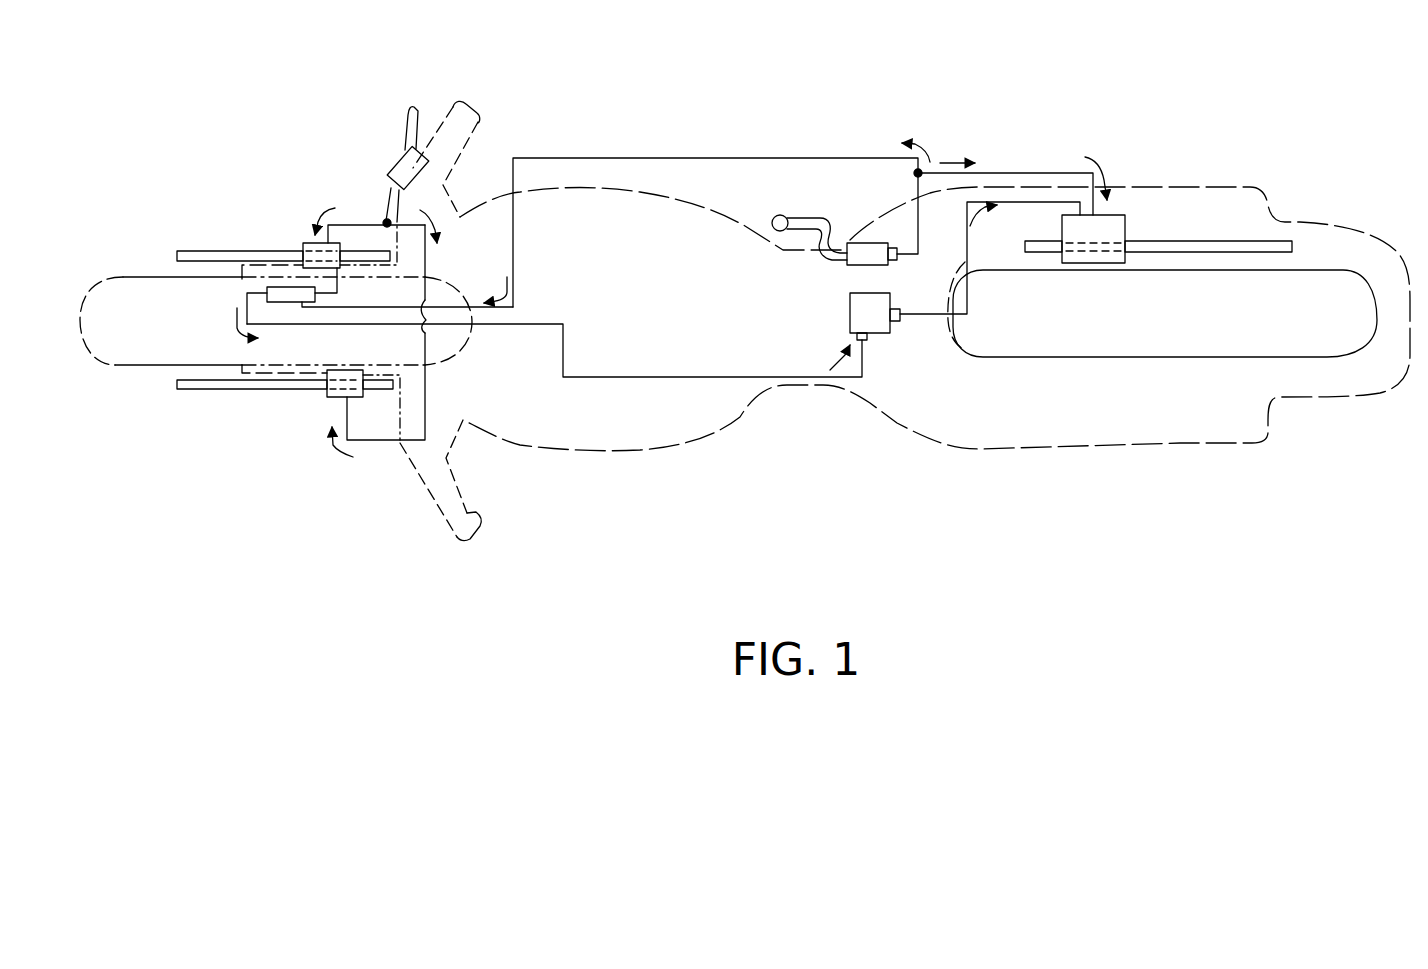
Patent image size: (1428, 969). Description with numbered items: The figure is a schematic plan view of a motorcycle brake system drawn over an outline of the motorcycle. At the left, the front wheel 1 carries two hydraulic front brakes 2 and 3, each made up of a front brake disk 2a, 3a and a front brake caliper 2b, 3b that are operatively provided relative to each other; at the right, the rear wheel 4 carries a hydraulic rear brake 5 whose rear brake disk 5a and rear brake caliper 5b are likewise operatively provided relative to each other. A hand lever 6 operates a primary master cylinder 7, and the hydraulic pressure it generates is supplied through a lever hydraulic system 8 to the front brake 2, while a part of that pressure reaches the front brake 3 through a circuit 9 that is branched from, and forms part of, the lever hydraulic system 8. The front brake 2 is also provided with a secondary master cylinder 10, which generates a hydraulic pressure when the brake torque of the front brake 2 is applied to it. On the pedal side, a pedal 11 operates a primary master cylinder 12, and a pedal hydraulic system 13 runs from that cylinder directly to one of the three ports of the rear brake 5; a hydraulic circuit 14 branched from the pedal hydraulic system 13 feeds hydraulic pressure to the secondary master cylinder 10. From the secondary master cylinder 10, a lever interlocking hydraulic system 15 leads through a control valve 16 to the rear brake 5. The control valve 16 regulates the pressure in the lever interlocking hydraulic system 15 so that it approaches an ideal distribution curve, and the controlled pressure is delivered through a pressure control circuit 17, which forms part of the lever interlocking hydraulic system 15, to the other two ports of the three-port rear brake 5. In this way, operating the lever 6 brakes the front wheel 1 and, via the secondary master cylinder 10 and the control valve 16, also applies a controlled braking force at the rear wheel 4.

The front wheel 1 is at (120, 280).
The front brake 2 is at (267, 219).
The front brake disk 2a is at (203, 251).
The front brake caliper 2b is at (298, 243).
The front brake 3 is at (277, 427).
The front brake disk 3a is at (215, 390).
The front brake caliper 3b is at (327, 399).
The rear wheel 4 is at (1377, 335).
The rear brake 5 is at (1177, 202).
The rear brake disk 5a is at (1293, 244).
The rear brake caliper 5b is at (1113, 227).
The lever 6 is at (403, 122).
The primary master cylinder 7 is at (391, 160).
The lever hydraulic system 8 is at (355, 225).
The circuit 9 is at (437, 385).
The secondary master cylinder 10 is at (247, 288).
The pedal 11 is at (805, 217).
The primary master cylinder 12 is at (857, 268).
The pedal hydraulic system 13 is at (1023, 173).
The hydraulic circuit 14 is at (673, 158).
The lever interlocking hydraulic system 15 is at (669, 377).
The control valve 16 is at (850, 308).
The pressure control circuit 17 is at (966, 248).